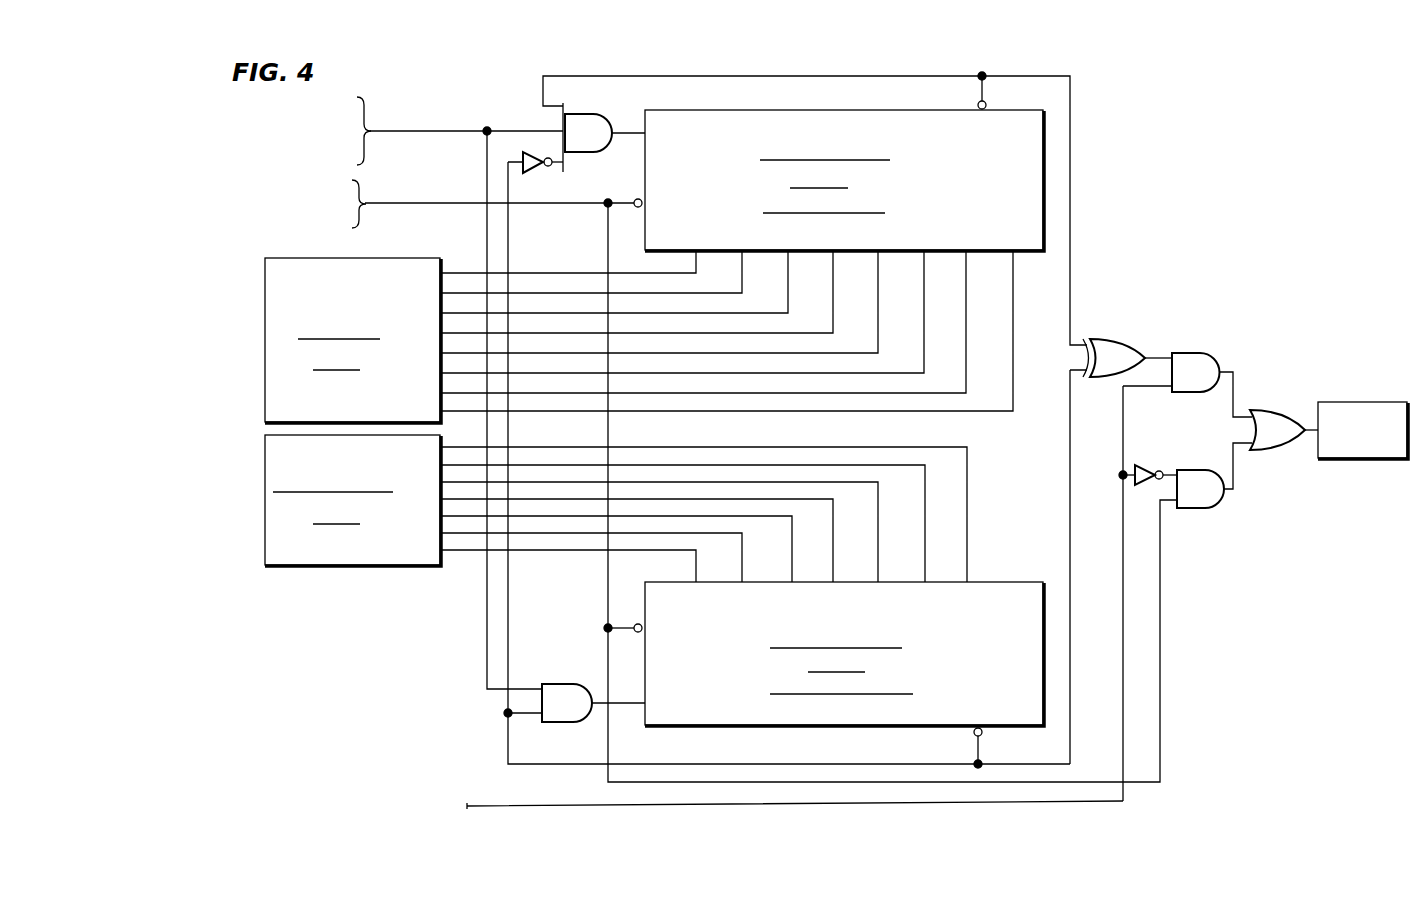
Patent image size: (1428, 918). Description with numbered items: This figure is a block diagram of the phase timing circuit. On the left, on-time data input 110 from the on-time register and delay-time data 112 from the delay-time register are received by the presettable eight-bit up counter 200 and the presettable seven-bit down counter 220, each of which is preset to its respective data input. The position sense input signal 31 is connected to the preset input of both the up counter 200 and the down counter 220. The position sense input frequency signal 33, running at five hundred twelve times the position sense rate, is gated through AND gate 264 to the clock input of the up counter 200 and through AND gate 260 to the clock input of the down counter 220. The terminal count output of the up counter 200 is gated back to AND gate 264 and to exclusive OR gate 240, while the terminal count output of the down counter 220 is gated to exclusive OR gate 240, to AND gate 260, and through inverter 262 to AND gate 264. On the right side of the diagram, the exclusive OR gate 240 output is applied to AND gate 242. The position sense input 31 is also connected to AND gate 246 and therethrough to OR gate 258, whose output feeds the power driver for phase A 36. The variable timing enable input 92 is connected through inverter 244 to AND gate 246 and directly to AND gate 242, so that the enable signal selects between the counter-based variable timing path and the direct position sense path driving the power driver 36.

The 512X position sense input frequency signal 33 is at (388, 131).
The position sense input signal 31 is at (388, 204).
The on-time data input 110 is at (334, 259).
The delay-time data 112 is at (333, 566).
The presettable eight-bit up counter 200 is at (840, 106).
The presettable seven-bit down counter 220 is at (834, 728).
The AND gate 260 is at (551, 686).
The inverter 262 is at (531, 173).
The AND gate 264 is at (581, 113).
The exclusive OR gate 240 is at (1105, 342).
The AND gate 242 is at (1187, 353).
The inverter 244 is at (1146, 466).
The AND gate 246 is at (1192, 509).
The OR gate 258 is at (1276, 404).
The power driver for phase A 36 is at (1345, 402).
The variable timing enable input 92 is at (490, 805).